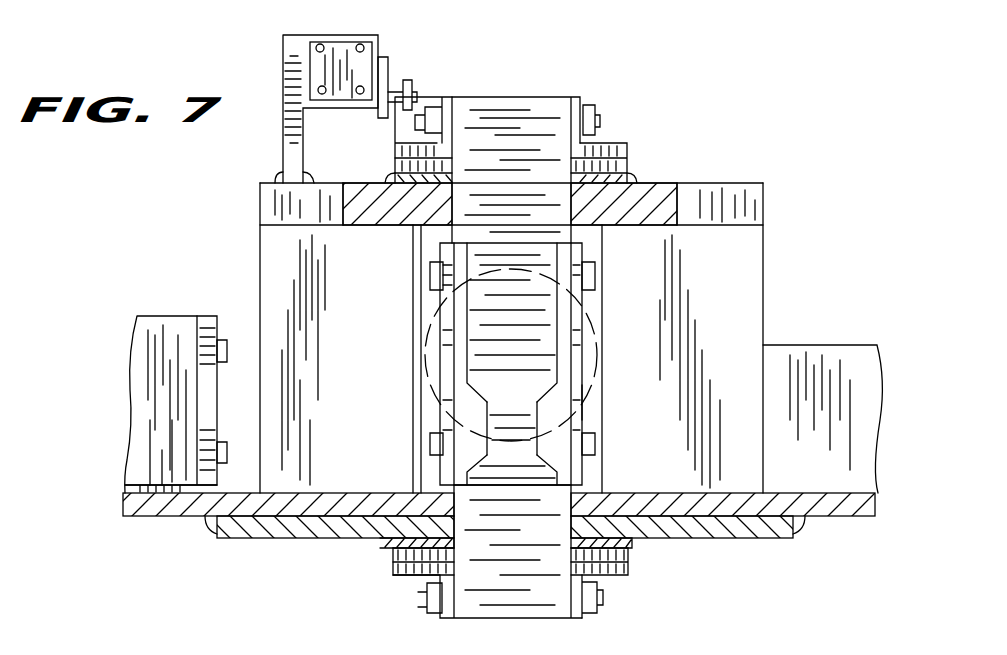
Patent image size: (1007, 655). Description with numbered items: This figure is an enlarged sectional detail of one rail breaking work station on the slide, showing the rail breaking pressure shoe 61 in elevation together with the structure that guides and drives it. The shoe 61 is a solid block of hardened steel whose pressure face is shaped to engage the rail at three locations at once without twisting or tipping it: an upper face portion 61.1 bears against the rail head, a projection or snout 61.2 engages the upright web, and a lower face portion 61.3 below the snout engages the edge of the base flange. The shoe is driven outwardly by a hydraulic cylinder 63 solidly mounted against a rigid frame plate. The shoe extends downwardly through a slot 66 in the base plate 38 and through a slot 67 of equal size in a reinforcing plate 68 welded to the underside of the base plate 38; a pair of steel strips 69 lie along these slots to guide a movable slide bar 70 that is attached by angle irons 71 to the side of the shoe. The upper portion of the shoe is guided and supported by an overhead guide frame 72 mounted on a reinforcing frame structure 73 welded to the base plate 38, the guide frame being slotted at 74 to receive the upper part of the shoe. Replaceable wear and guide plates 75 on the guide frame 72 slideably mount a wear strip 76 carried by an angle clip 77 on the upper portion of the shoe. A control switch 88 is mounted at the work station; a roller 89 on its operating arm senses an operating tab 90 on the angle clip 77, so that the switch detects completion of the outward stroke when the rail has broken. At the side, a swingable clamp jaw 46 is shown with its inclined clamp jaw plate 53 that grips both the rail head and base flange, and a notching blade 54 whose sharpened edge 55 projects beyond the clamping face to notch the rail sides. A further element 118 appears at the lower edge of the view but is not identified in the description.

The base plate 38 is at (175, 518).
The clamp jaw 46 is at (165, 330).
The clamp jaw plate 53 is at (162, 400).
The notching blade 54 is at (217, 333).
The sharpened edge 55 is at (215, 432).
The rail breaking pressure shoe 61 is at (571, 325).
The upper face portion 61.1 is at (487, 350).
The snout 61.2 is at (500, 408).
The lower face portion 61.3 is at (487, 480).
The hydraulic cylinder 63 is at (590, 397).
The slot 66 is at (560, 500).
The slot 67 is at (572, 530).
The reinforcing plate 68 is at (735, 538).
The steel strips 69 is at (400, 563).
The slide bar 70 is at (420, 583).
The angle irons 71 is at (468, 600).
The overhead guide frame 72 is at (665, 183).
The reinforcing frame structure 73 is at (260, 245).
The slot 74 is at (571, 202).
The replaceable wear and guide plates 75 is at (628, 180).
The wear strip 76 is at (612, 148).
The angle clip 77 is at (575, 98).
The control switch 88 is at (335, 35).
The roller 89 is at (407, 80).
The operating tab 90 is at (428, 108).
The lower member 118 is at (210, 653).